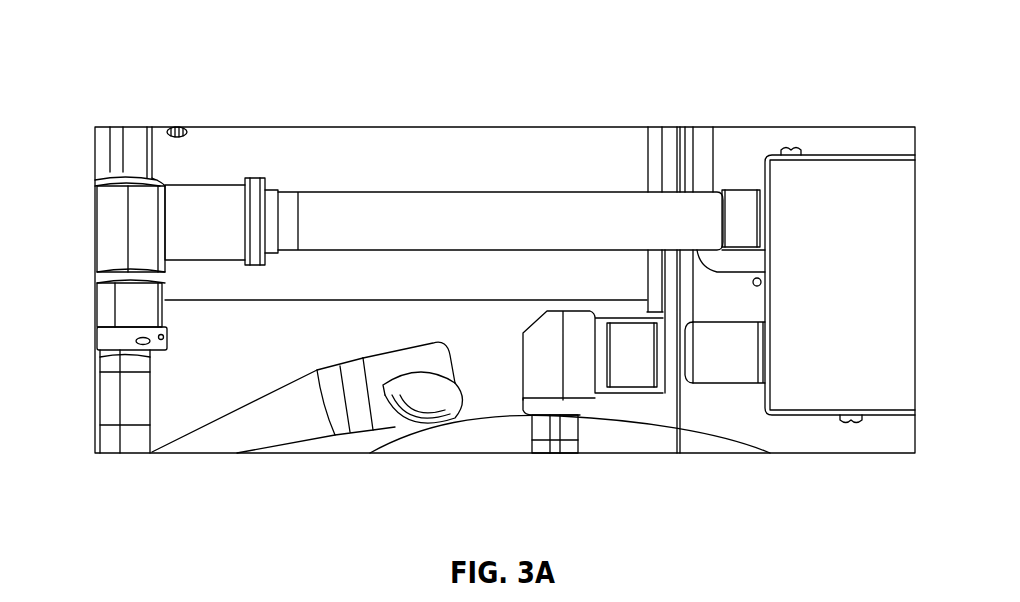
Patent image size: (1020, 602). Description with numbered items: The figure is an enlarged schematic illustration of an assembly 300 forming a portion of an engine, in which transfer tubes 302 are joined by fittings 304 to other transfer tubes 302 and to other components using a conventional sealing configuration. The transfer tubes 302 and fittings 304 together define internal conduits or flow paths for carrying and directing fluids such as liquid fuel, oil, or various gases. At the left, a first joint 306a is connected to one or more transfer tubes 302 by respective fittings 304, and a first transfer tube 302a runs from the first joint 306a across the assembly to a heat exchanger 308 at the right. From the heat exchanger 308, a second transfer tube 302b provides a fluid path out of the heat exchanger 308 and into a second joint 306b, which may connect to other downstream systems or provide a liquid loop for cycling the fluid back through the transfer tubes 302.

The assembly 300 is at (204, 32).
The transfer tubes 302 is at (130, 437).
The first transfer tube 302a is at (443, 215).
The second transfer tube 302b is at (720, 365).
The fittings 304 is at (262, 178).
The first joint 306a is at (120, 230).
The second joint 306b is at (580, 365).
The heat exchanger 308 is at (855, 175).